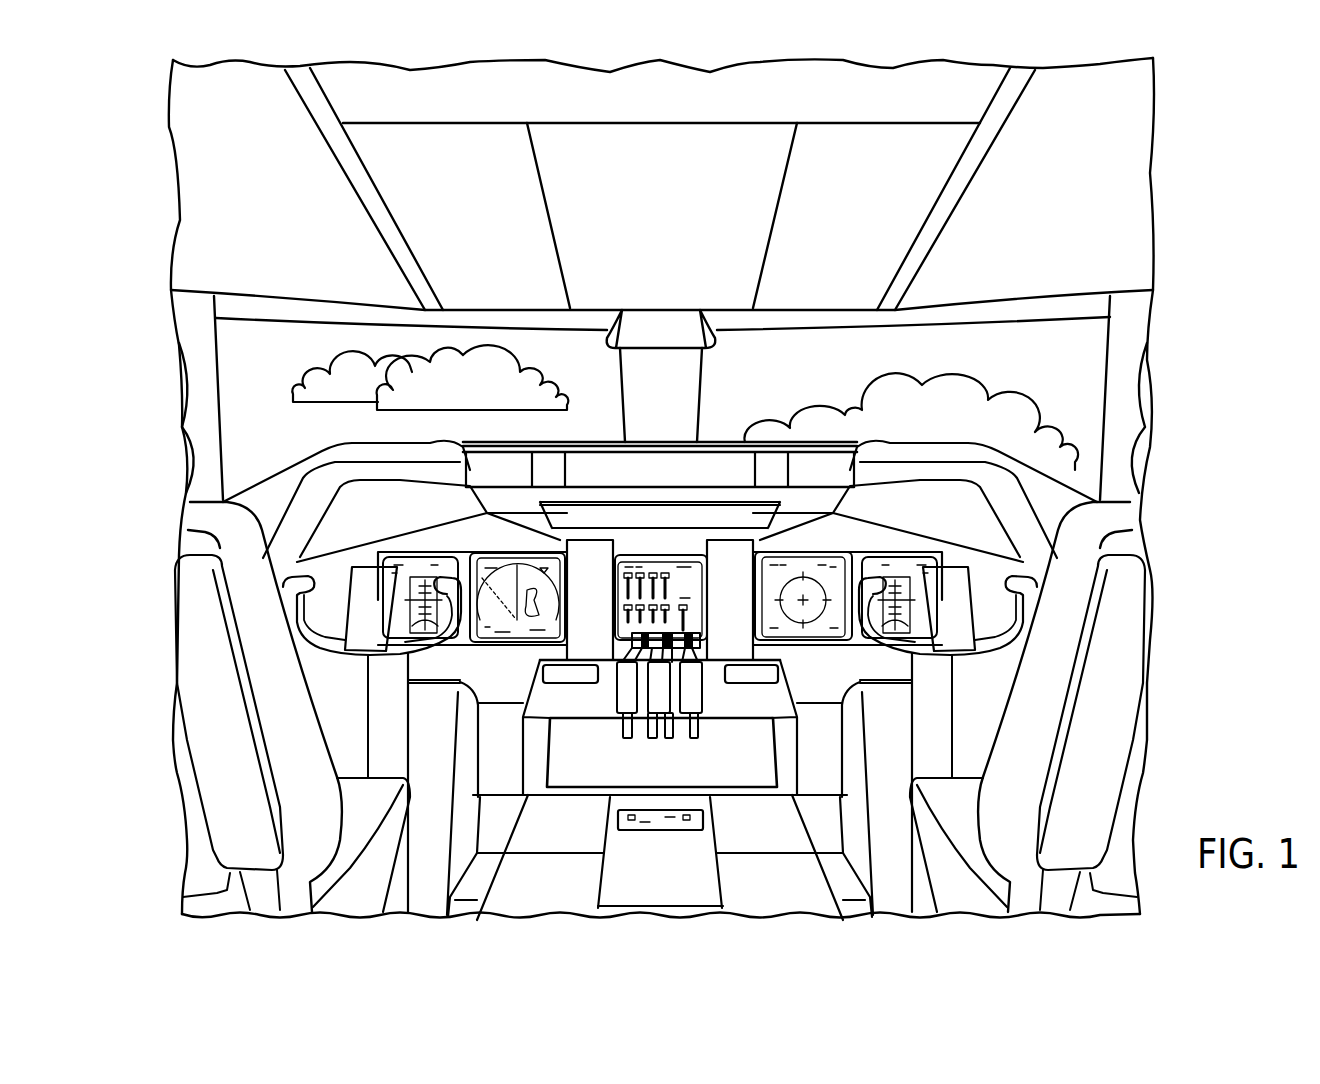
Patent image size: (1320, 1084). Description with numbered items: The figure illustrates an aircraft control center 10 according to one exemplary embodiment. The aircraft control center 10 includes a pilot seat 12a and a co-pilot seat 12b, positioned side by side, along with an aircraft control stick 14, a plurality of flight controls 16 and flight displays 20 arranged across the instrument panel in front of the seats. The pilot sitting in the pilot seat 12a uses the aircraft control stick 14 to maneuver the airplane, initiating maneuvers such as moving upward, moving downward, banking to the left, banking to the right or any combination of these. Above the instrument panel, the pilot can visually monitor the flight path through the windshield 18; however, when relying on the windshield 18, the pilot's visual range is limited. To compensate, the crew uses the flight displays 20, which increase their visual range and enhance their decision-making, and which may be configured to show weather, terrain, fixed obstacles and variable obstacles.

The aircraft control center 10 is at (1212, 186).
The pilot seat 12a is at (178, 606).
The co-pilot seat 12b is at (1140, 620).
The aircraft control stick 14 is at (418, 643).
The flight controls 16 is at (703, 665).
The windshield 18 is at (238, 367).
The flight displays 20 is at (417, 555).